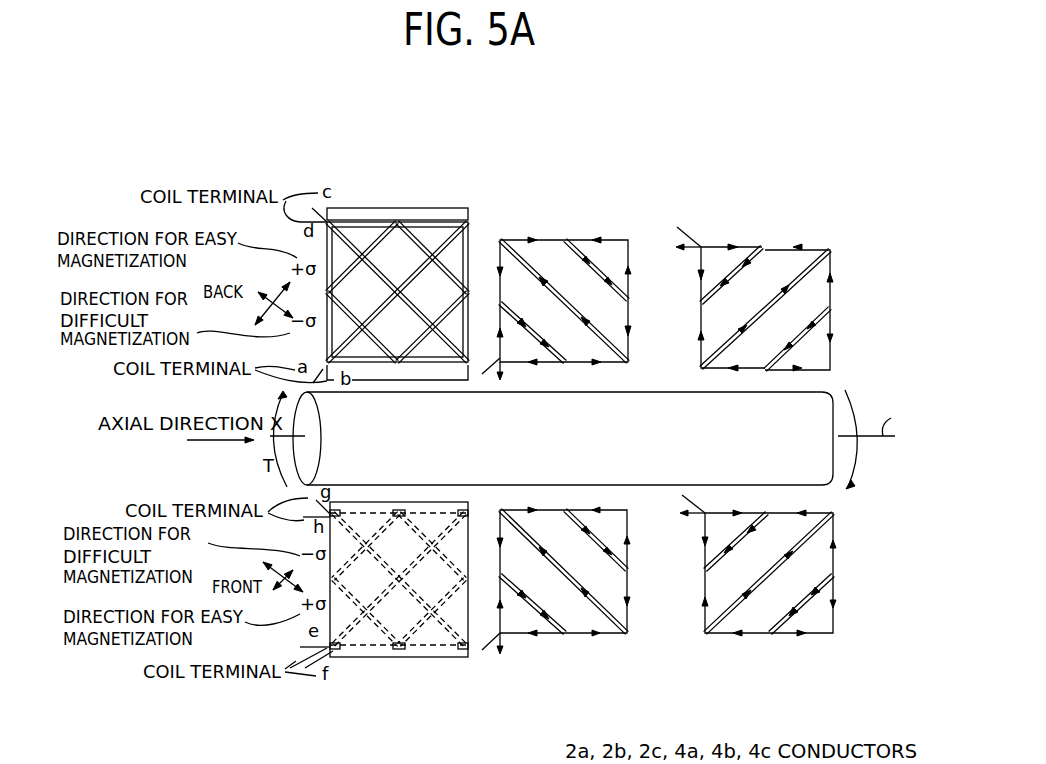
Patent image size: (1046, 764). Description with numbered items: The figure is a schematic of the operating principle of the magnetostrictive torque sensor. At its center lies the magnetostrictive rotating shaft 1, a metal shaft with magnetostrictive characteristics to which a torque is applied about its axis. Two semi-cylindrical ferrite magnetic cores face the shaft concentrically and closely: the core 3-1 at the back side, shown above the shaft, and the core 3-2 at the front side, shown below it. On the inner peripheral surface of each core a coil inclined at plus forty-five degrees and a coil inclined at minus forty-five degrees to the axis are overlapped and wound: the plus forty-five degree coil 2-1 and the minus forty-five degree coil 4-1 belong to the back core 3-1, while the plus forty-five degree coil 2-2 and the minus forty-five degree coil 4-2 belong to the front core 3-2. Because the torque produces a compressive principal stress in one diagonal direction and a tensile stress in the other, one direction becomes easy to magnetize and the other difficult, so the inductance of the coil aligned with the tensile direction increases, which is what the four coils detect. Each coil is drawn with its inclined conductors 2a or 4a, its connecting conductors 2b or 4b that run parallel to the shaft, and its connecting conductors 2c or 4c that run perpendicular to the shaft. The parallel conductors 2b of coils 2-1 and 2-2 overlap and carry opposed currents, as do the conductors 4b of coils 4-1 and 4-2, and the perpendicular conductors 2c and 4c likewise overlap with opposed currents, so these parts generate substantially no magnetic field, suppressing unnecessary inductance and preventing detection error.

The magnetostrictive rotating shaft 1 is at (411, 453).
The semi-cylindrical ferrite magnetic core 3-1 is at (384, 210).
The semi-cylindrical ferrite magnetic core 3-2 is at (365, 657).
The −45° coil 4-1 is at (560, 258).
The −45° coil 4-2 is at (577, 612).
The +45° coil 2-1 is at (743, 285).
The +45° coil 2-2 is at (780, 597).
The conductor 2a is at (790, 289).
The connecting conductor 2b is at (802, 250).
The connecting conductor 2c is at (832, 256).
The conductor 4a is at (545, 268).
The connecting conductor 4b is at (591, 240).
The connecting conductor 4c is at (628, 246).